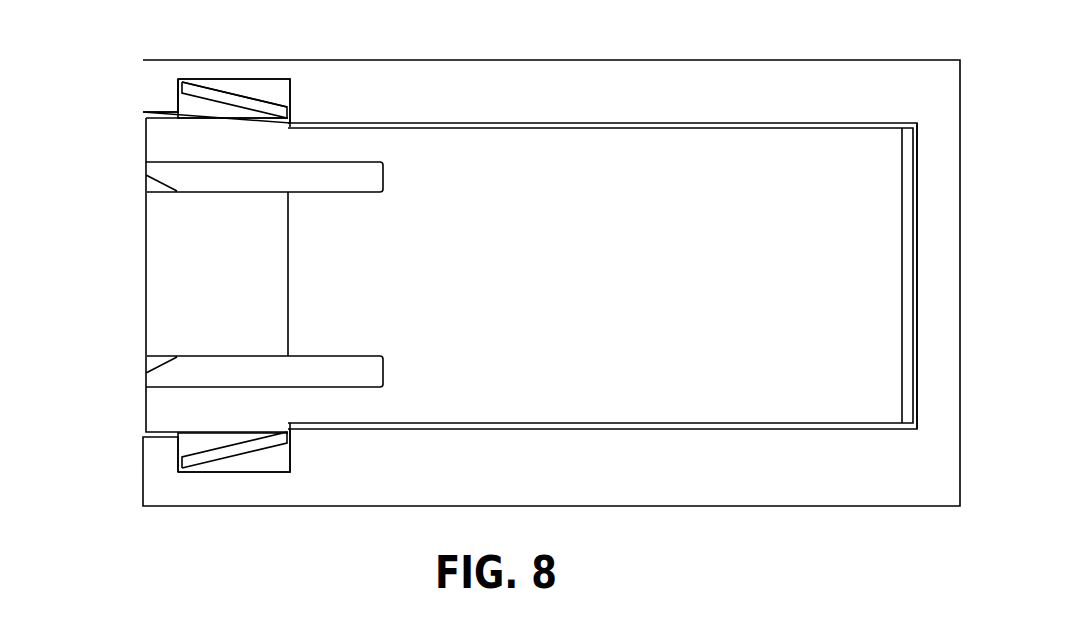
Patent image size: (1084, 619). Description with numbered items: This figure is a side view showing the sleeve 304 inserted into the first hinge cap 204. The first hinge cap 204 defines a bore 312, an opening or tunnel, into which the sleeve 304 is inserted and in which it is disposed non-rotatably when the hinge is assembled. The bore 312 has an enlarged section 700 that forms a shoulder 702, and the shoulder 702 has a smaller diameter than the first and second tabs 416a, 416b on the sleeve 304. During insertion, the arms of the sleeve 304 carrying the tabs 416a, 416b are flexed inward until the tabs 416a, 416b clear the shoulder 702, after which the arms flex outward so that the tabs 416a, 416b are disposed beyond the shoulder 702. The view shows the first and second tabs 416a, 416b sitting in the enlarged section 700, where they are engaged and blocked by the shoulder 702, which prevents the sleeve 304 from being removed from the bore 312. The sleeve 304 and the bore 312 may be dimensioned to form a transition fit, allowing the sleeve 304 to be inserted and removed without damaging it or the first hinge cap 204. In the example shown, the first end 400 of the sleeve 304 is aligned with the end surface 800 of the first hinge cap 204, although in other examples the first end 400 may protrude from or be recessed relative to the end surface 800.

The first hinge cap 204 is at (667, 87).
The sleeve 304 is at (560, 150).
The bore 312 is at (425, 104).
The first end 400 is at (145, 248).
The first tab 416a is at (209, 107).
The second tab 416b is at (207, 460).
The enlarged section 700 is at (266, 78).
The shoulder 702 is at (178, 98).
The end surface 800 is at (143, 100).